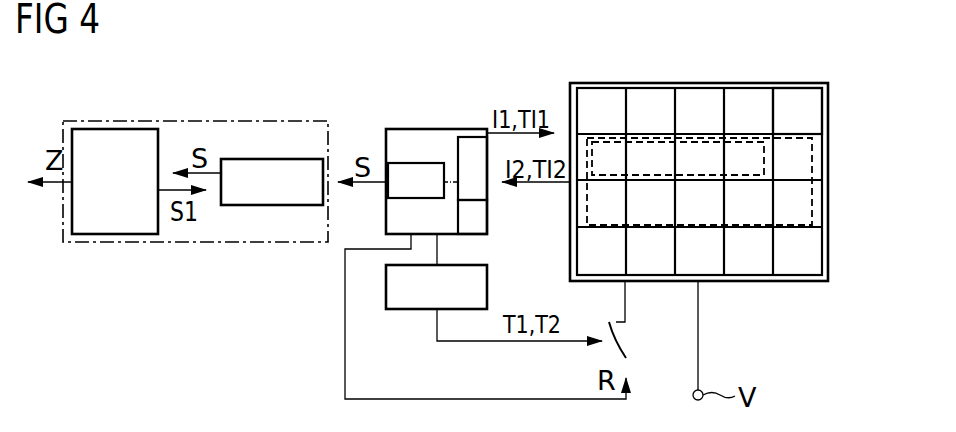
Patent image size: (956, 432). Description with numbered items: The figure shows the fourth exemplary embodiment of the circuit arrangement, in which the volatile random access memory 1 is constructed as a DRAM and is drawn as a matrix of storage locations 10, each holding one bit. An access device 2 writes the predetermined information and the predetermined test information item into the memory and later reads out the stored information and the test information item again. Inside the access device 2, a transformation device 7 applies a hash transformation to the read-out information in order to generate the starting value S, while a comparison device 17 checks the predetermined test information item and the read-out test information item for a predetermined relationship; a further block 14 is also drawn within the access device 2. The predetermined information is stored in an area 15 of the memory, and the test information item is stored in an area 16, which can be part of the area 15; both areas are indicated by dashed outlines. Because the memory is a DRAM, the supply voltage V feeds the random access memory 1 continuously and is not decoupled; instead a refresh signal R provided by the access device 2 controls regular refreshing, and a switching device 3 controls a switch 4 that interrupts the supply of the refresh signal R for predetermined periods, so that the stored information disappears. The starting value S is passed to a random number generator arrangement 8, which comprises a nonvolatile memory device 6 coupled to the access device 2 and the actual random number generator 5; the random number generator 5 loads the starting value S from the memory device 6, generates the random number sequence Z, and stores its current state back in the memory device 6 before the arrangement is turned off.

The random access memory 1 is at (829, 250).
The access device 2 is at (437, 129).
The switching device 3 is at (488, 287).
The switch 4 is at (622, 343).
The random number generator 5 is at (115, 129).
The memory device 6 is at (273, 159).
The transformation device 7 is at (403, 163).
The random number generator arrangement 8 is at (192, 242).
The storage locations 10 is at (815, 112).
The register 14 is at (480, 219).
The area 15 is at (813, 155).
The area 16 is at (764, 157).
The comparison device 17 is at (472, 143).